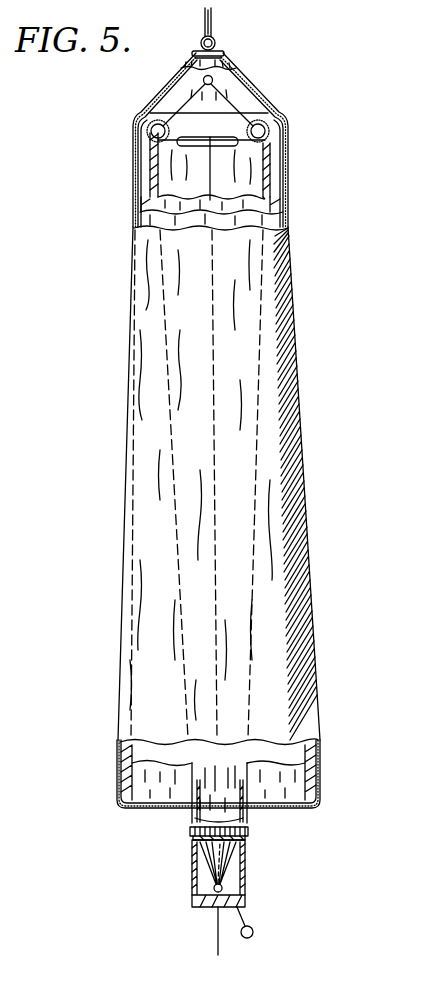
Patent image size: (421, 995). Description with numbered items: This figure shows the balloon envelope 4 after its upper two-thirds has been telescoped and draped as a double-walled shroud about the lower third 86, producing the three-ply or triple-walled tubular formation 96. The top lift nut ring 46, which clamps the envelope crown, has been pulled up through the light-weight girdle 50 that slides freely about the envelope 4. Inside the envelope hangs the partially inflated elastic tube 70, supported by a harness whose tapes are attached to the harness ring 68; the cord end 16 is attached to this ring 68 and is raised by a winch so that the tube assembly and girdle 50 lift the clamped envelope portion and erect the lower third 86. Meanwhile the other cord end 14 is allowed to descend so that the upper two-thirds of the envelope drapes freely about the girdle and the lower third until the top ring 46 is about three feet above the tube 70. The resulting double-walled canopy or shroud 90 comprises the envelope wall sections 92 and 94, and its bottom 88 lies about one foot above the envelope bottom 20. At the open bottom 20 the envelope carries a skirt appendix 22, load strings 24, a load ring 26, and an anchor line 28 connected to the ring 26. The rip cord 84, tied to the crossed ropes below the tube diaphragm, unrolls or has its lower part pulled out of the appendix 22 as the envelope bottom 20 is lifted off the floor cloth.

The envelope 4 is at (304, 432).
The cord end 14 is at (204, 25).
The cord end 16 is at (213, 25).
The open bottom 20 is at (192, 822).
The skirt appendix 22 is at (192, 879).
The load strings 24 is at (210, 868).
The load ring 26 is at (215, 893).
The anchor line 28 is at (217, 948).
The top lift nut ring 46 is at (217, 46).
The girdle 50 is at (282, 128).
The harness ring 68 is at (205, 78).
The elastic tube 70 is at (262, 141).
The rip cord 84 is at (211, 181).
The lower third 86 is at (158, 190).
The bottom 88 is at (312, 806).
The double-walled canopy or shroud 90 is at (322, 752).
The envelope wall section 92 is at (289, 156).
The envelope wall section 94 is at (290, 180).
The triple-walled tubular formation 96 is at (122, 541).